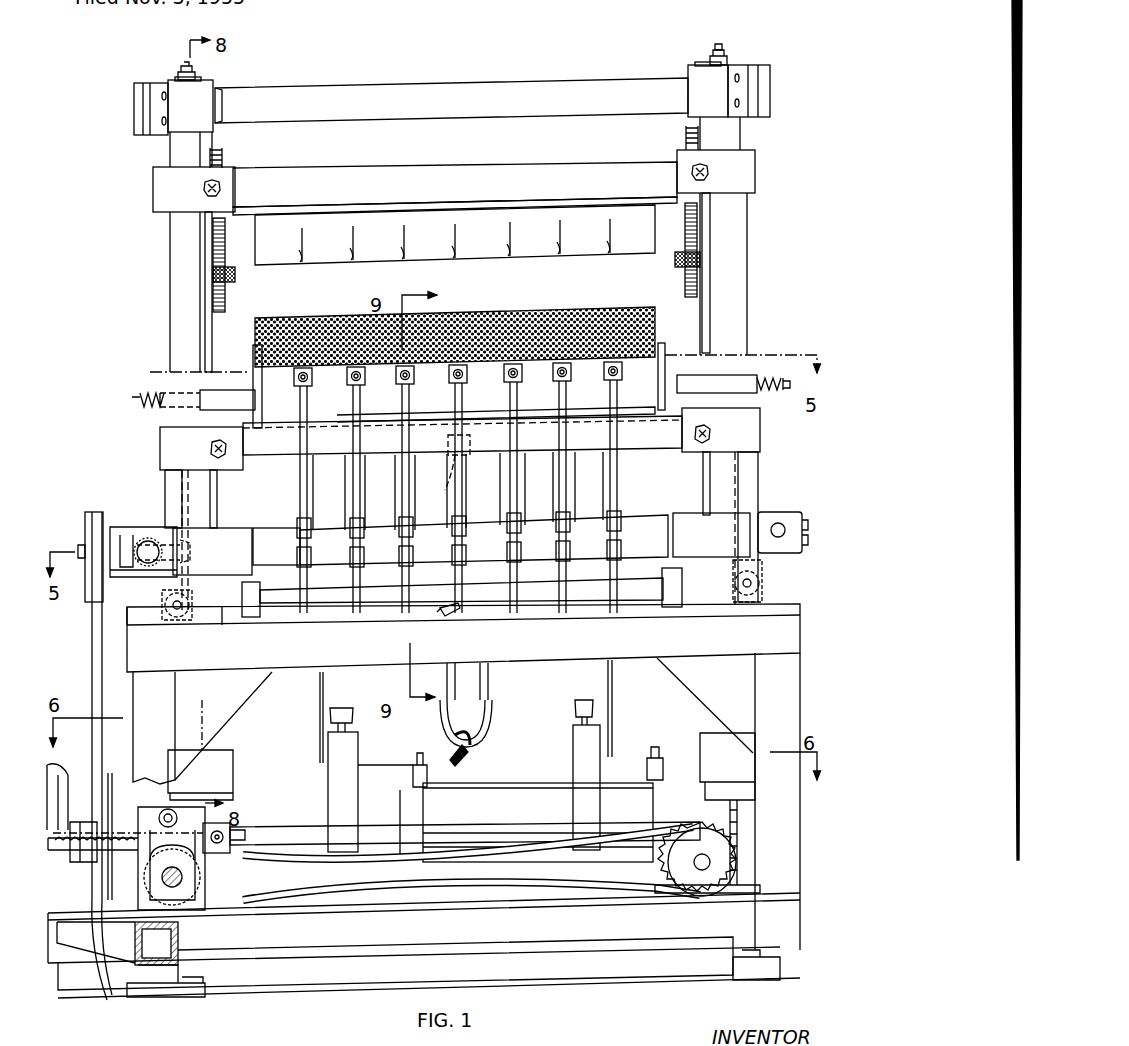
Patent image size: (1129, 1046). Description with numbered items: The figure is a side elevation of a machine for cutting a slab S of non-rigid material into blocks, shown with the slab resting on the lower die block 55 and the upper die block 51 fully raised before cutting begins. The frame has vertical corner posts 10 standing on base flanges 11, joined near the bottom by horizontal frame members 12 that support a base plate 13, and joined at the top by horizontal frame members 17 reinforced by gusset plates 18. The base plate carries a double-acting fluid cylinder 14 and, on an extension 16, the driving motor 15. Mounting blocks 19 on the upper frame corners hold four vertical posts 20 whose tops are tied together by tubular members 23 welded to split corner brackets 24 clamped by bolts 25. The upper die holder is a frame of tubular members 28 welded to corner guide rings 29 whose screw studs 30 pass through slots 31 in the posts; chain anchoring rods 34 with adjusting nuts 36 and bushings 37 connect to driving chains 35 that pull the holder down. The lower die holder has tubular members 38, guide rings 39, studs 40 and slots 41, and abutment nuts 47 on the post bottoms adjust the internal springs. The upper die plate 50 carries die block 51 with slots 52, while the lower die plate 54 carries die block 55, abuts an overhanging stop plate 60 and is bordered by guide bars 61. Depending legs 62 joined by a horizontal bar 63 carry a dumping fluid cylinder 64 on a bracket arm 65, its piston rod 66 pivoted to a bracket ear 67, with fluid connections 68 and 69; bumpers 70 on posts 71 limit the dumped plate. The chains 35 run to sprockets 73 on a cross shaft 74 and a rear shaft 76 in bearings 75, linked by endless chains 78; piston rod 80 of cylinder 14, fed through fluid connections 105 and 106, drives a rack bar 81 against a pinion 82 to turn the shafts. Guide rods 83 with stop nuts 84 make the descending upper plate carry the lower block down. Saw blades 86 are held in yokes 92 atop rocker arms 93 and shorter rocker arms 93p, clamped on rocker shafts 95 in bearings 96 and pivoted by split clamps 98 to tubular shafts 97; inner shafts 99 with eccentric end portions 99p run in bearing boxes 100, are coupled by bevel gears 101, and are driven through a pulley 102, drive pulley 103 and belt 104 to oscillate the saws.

The vertical corner posts 10 is at (135, 690).
The base flanges 11 is at (150, 997).
The horizontal frame members 12 is at (178, 940).
The base plate 13 is at (285, 912).
The double-acting fluid cylinder 14 is at (527, 825).
The driving motor 15 is at (60, 778).
The extension of the base plate 16 is at (84, 925).
The horizontal frame members 17 is at (570, 655).
The gusset plates 18 is at (240, 697).
The mounting blocks 19 is at (150, 627).
The vertical tubes or cylindrical posts 20 is at (175, 303).
The horizontal tubular members 23 is at (440, 85).
The split corner brackets 24 is at (205, 90).
The bolts 25 is at (165, 92).
The horizontal tubular members 28 is at (438, 183).
The corner guide rings 29 is at (160, 188).
The screw studs 30 is at (205, 189).
The slots 31 is at (207, 325).
The chain anchoring rods 34 is at (183, 66).
The driving chains 35 is at (730, 812).
The adjusting nuts 36 is at (715, 45).
The bushings 37 is at (200, 77).
The horizontal tubular members 38 is at (420, 432).
The corner guide rings 39 is at (160, 447).
The screw studs 40 is at (211, 448).
The slots 41 is at (210, 490).
The abutment nuts 47 is at (235, 768).
The die plate 50 is at (495, 203).
The die block 51 is at (540, 222).
The downwardly open slots 52 is at (303, 260).
The die plate 54 is at (325, 430).
The die block 55 is at (538, 402).
The overhanging stop plate 60 is at (478, 395).
The guide bars 61 is at (255, 362).
The depending vertical legs 62 is at (320, 688).
The horizontal bar 63 is at (378, 766).
The fluid cylinder 64 is at (470, 665).
The bracket arm 65 is at (480, 752).
The piston rod 66 is at (462, 484).
The bracket ear 67 is at (445, 465).
The pressure fluid connection 68 is at (450, 616).
The pressure fluid connection 69 is at (462, 760).
The bumpers 70 is at (330, 716).
The posts 71 is at (328, 772).
The sprockets 73 is at (695, 890).
The cross shaft 74 is at (710, 860).
The bearings 75 is at (760, 890).
The shaft 76 is at (183, 877).
The endless chains 78 is at (445, 856).
The piston rod 80 is at (280, 838).
The rack bar 81 is at (121, 836).
The pinion 82 is at (145, 875).
The vertical guide rods 83 is at (213, 238).
The adjustable stop nuts 84 is at (213, 275).
The saw blades 86 is at (255, 400).
The yoke 92 is at (362, 368).
The rocker arms 93 is at (300, 482).
The rocker arms 93p is at (165, 490).
The rocker shaft 95 is at (298, 592).
The bearings 96 is at (250, 620).
The tubular shafts 97 is at (373, 528).
The split clamps 98 is at (303, 528).
The shafts 99 is at (253, 546).
The eccentric end portions 99p is at (178, 540).
The bearing boxes 100 is at (228, 530).
The bevel gears 101 is at (145, 568).
The pulley 102 is at (86, 520).
The drive pulley 103 is at (107, 998).
The belt 104 is at (92, 628).
The fluid connection 105 is at (415, 757).
The fluid connection 106 is at (652, 750).
The slab S is at (600, 318).